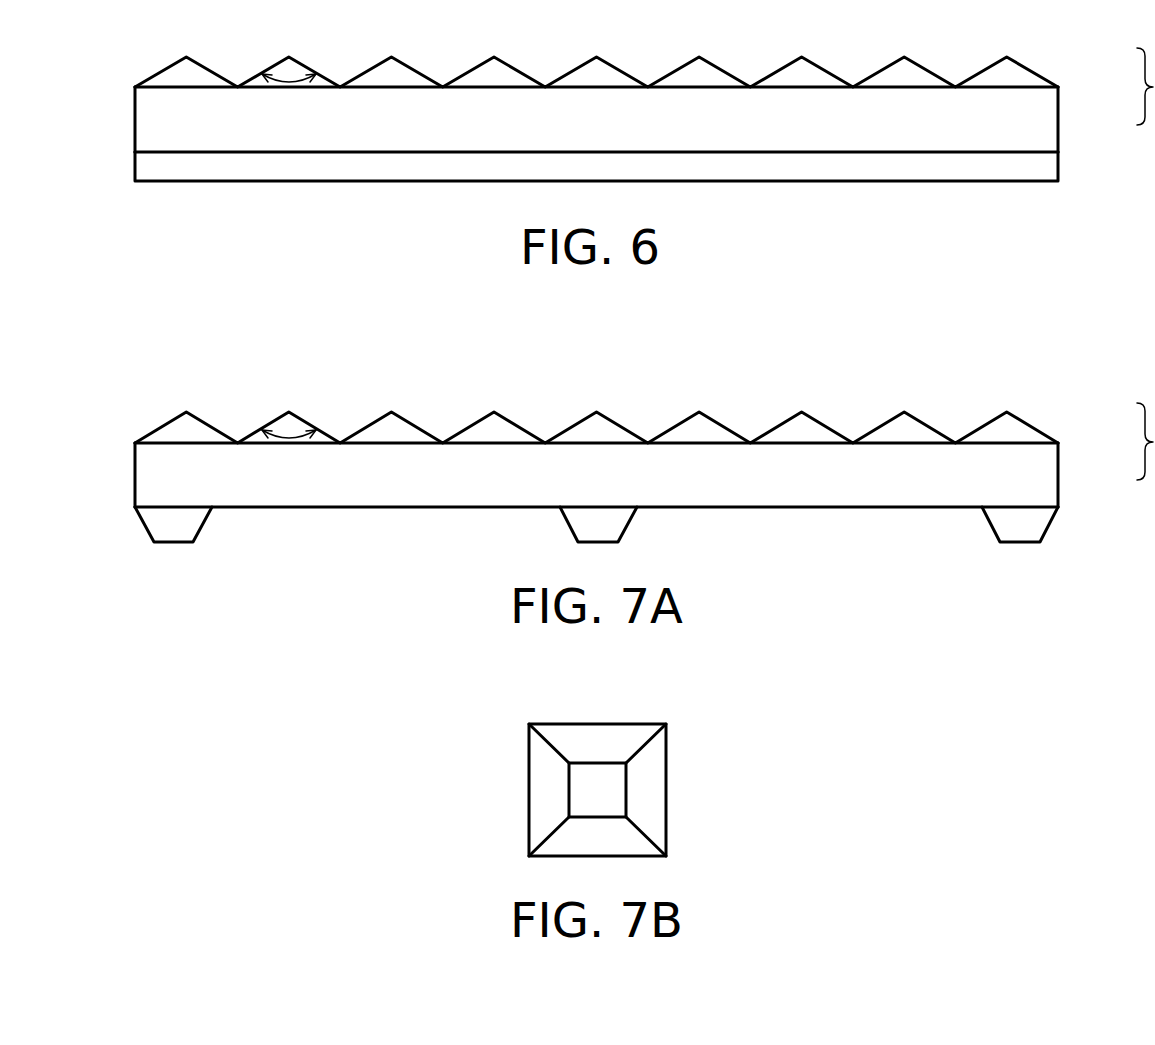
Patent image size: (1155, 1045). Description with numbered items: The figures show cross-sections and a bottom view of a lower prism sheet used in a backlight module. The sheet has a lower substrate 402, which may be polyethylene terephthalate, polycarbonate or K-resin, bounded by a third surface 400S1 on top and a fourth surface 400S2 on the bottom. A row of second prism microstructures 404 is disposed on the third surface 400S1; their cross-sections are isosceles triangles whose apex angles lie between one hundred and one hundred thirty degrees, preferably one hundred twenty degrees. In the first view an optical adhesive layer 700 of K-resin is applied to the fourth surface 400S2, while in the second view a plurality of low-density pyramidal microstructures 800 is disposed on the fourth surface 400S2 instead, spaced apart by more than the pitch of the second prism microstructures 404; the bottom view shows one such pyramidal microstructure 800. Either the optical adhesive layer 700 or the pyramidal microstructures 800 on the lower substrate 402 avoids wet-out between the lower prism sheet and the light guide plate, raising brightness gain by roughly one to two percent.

In FIG. 6, the third surface 400S1 is at (190, 76).
In FIG. 7A, the third surface 400S1 is at (190, 432).
In FIG. 6, the fourth surface 400S2 is at (190, 164).
In FIG. 7A, the fourth surface 400S2 is at (298, 509).
In FIG. 6, the lower substrate 402 is at (1058, 113).
In FIG. 7A, the lower substrate 402 is at (1058, 468).
In FIG. 6, the second prism microstructures 404 is at (1022, 75).
In FIG. 7A, the second prism microstructures 404 is at (1020, 430).
In FIG. 6, the optical adhesive layer 700 is at (1058, 167).
In FIG. 7A, the pyramidal microstructures 800 is at (1028, 525).
In FIG. 7B, the pyramidal microstructures 800 is at (657, 790).